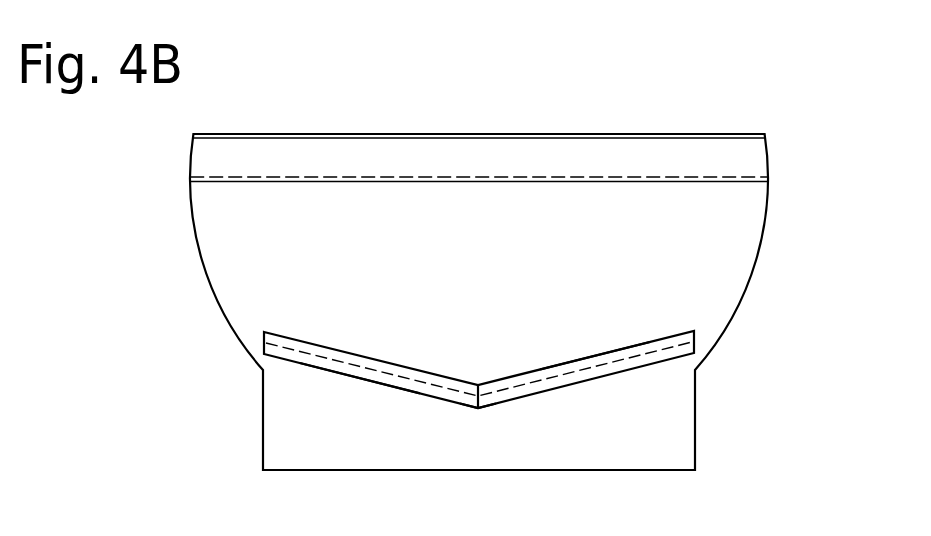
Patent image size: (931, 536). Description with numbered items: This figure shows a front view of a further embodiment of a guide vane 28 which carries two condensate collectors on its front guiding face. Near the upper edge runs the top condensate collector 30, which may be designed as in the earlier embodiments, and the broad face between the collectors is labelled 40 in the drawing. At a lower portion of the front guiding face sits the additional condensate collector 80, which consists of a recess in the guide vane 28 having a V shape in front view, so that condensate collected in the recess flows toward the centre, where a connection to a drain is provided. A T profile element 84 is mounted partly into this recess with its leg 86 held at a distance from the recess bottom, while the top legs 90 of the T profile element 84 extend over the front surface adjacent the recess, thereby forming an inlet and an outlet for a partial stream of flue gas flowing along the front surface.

The guide vane 28 is at (702, 260).
The top condensate collector 30 is at (792, 160).
The interior cavity 40 is at (462, 253).
The additional condensate collector 80 is at (479, 372).
The T profile element 84 is at (463, 418).
The leg 86 is at (577, 373).
The top legs 90 is at (372, 380).